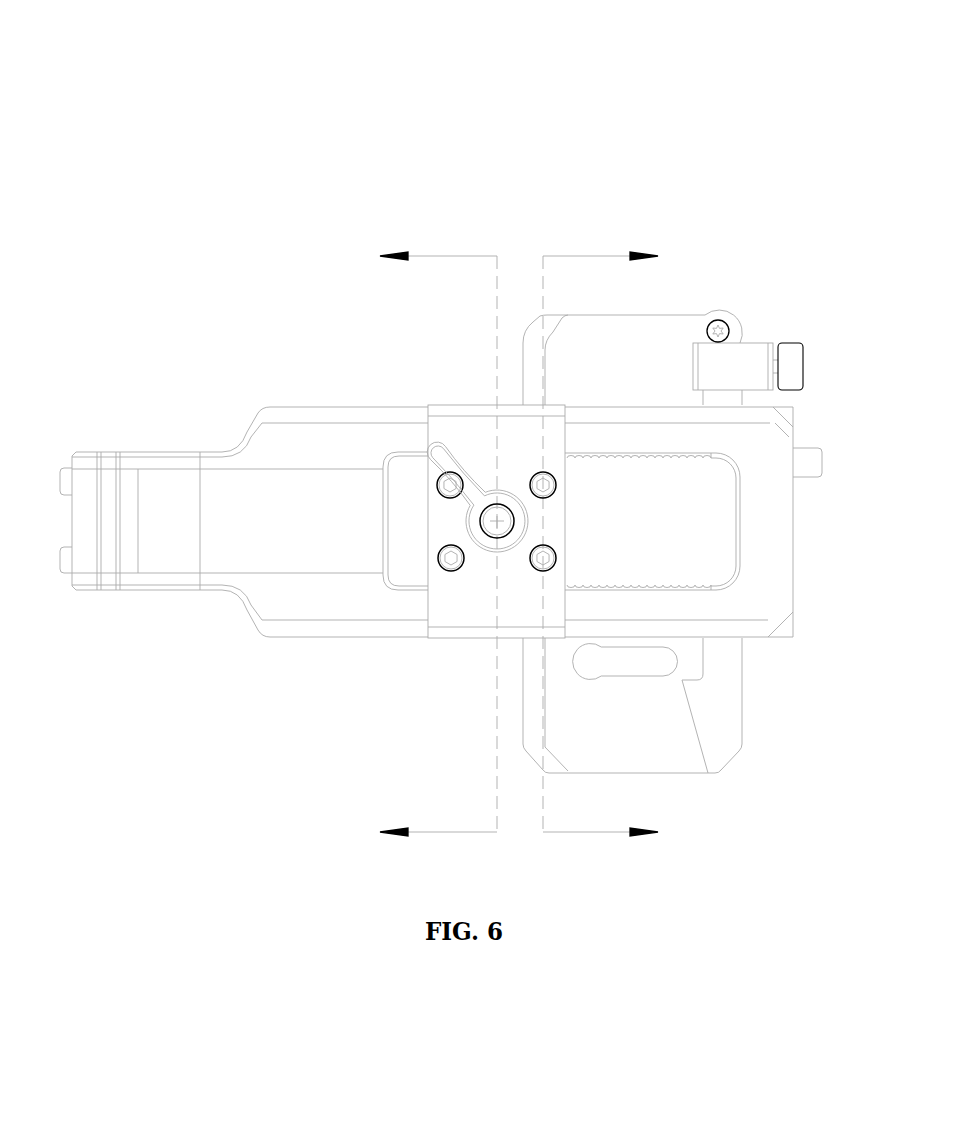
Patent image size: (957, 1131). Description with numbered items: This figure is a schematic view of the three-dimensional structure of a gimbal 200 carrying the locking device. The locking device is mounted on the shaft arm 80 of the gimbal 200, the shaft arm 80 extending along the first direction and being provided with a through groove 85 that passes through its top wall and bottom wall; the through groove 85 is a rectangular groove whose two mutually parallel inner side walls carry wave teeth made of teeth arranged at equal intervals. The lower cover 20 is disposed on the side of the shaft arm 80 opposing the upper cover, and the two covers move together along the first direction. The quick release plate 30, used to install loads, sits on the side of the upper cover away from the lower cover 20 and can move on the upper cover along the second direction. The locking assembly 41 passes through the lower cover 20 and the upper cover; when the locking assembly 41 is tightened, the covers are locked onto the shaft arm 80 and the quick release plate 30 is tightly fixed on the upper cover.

The gimbal 200 is at (482, 46).
The shaft arm 80 is at (282, 428).
The lower cover 20 is at (443, 428).
The locking assembly 41 is at (482, 540).
The through groove 85 is at (707, 535).
The quick release plate 30 is at (707, 712).